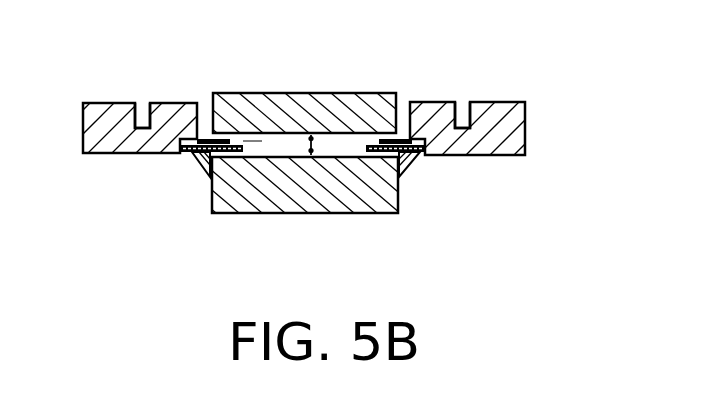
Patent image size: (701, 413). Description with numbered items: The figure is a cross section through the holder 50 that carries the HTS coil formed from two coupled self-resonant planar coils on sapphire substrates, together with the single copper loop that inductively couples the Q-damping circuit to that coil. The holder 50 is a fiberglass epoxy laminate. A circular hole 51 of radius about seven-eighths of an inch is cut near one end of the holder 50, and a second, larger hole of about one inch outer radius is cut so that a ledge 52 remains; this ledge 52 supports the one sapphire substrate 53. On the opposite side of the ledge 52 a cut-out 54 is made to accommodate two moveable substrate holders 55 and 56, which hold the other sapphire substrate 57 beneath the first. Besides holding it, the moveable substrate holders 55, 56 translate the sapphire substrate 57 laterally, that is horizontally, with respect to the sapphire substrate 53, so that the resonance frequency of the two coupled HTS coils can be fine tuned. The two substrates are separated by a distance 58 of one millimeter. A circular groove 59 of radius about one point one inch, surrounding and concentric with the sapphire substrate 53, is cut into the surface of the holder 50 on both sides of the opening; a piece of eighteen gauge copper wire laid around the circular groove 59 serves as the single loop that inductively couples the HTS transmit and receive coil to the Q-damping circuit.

The holder 50 is at (527, 118).
The circular hole 51 is at (262, 141).
The ledge 52 is at (203, 138).
The sapphire substrate 53 is at (325, 92).
The cut-out 54 is at (188, 148).
The moveable substrate holder 55 is at (193, 167).
The moveable substrate holder 56 is at (410, 160).
The sapphire substrate 57 is at (292, 203).
The distance 58 is at (308, 141).
The circular groove 59 is at (142, 108).